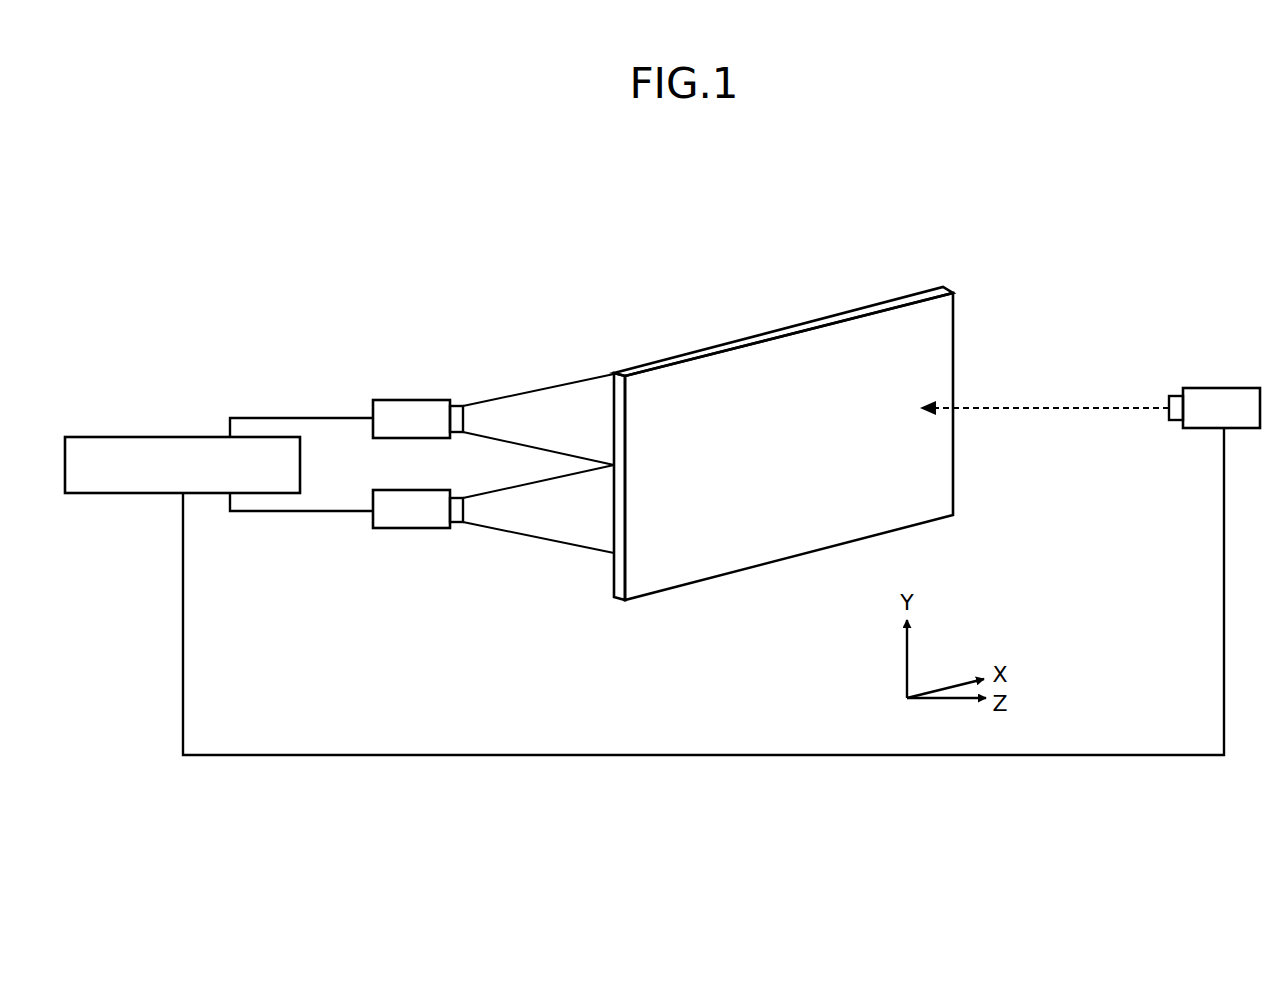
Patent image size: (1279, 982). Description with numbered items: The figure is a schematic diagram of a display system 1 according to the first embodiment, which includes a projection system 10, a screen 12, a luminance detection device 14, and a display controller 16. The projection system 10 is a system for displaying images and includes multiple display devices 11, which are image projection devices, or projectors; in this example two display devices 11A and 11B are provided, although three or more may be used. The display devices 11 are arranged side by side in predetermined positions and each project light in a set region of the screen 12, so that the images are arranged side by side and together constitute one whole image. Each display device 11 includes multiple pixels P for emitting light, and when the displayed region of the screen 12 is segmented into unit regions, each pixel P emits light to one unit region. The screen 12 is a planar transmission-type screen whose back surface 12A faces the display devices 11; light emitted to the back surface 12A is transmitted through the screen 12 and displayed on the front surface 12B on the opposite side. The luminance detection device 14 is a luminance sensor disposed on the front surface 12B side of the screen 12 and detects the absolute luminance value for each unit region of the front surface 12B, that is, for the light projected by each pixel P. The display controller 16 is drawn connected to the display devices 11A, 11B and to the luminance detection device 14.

The display system 1 is at (1078, 182).
The projection system 10 is at (430, 290).
The display devices 11 is at (489, 475).
The display device 11A is at (418, 400).
The display device 11B is at (389, 528).
The screen 12 is at (783, 408).
The back surface 12A is at (613, 412).
The front surface 12B is at (935, 459).
The luminance detection device 14 is at (1224, 364).
The display controller 16 is at (140, 415).
The pixels P is at (429, 427).